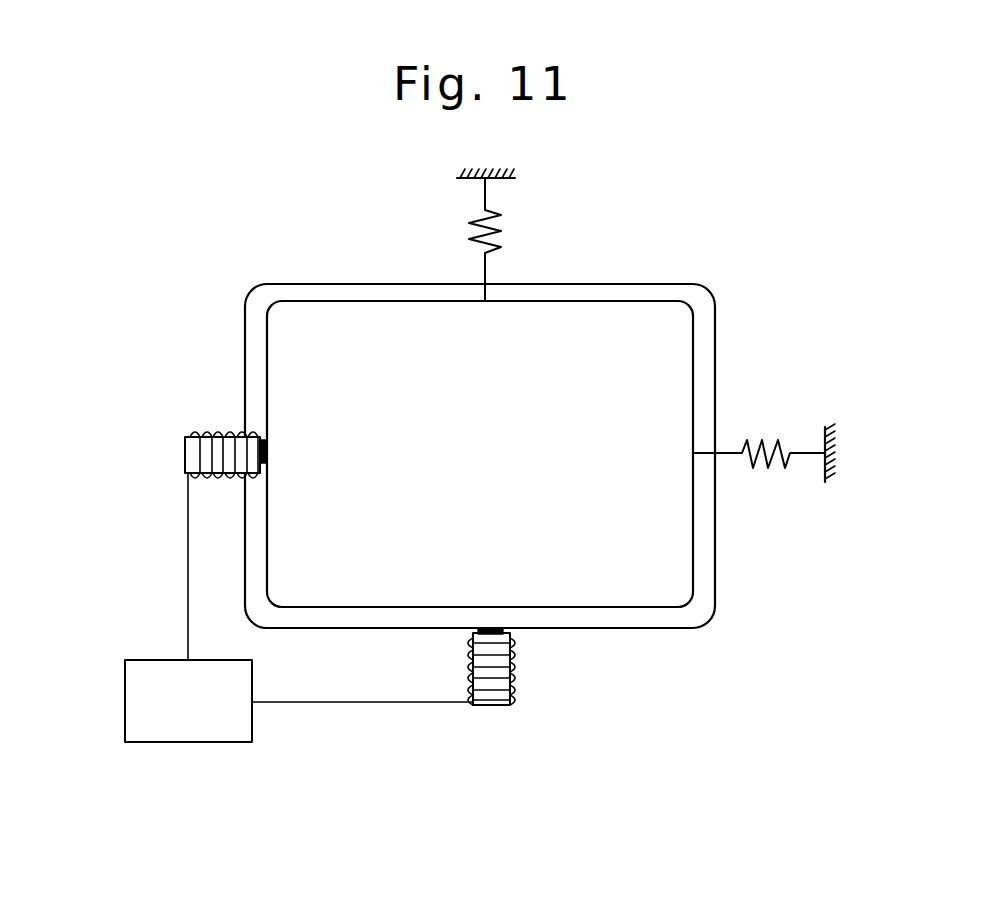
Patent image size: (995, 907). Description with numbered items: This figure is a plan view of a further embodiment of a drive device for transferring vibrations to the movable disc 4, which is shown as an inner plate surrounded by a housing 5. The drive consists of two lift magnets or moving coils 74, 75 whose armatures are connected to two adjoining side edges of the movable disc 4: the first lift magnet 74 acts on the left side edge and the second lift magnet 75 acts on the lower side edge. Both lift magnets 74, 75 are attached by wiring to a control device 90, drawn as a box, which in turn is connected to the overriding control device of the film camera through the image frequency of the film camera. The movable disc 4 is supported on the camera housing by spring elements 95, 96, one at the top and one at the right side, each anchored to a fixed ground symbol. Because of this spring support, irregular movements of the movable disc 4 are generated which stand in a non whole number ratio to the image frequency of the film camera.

The movable disc 4 is at (343, 356).
The housing 5 is at (700, 565).
The lift magnet 74 is at (198, 430).
The lift magnet 75 is at (510, 672).
The control device 90 is at (143, 708).
The spring element 95 is at (477, 237).
The spring element 96 is at (778, 440).